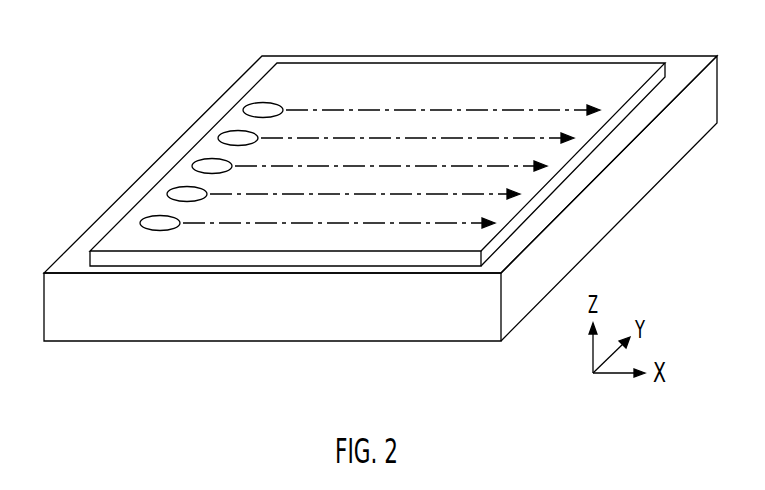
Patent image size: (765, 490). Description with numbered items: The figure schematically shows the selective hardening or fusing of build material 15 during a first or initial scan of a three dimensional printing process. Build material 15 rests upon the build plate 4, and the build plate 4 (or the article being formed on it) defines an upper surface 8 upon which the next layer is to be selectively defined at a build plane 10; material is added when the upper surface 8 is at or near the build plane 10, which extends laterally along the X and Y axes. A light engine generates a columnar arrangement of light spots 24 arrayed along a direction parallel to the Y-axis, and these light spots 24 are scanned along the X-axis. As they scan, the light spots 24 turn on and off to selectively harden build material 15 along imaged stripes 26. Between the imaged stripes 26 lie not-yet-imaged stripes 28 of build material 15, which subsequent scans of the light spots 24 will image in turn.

The build plate 4 is at (627, 188).
The upper surface 8 is at (683, 72).
The build plane 10 is at (148, 202).
The build material 15 is at (113, 246).
The light spots 24 is at (252, 108).
The imaged stripes 26 is at (405, 108).
The unimaged stripes 28 is at (507, 122).